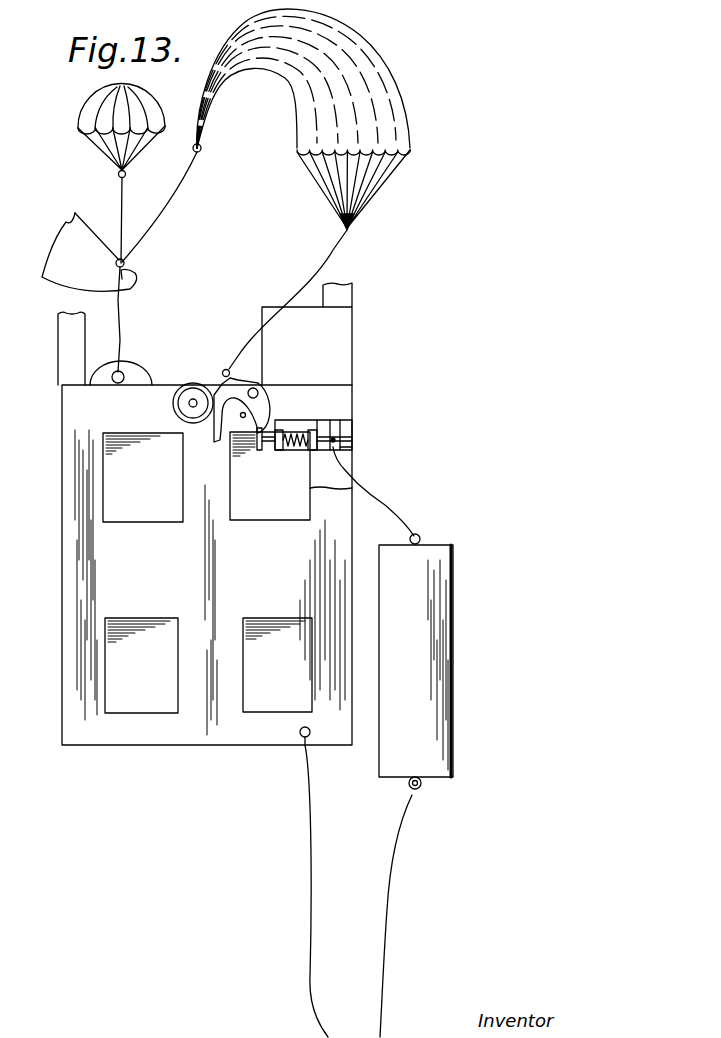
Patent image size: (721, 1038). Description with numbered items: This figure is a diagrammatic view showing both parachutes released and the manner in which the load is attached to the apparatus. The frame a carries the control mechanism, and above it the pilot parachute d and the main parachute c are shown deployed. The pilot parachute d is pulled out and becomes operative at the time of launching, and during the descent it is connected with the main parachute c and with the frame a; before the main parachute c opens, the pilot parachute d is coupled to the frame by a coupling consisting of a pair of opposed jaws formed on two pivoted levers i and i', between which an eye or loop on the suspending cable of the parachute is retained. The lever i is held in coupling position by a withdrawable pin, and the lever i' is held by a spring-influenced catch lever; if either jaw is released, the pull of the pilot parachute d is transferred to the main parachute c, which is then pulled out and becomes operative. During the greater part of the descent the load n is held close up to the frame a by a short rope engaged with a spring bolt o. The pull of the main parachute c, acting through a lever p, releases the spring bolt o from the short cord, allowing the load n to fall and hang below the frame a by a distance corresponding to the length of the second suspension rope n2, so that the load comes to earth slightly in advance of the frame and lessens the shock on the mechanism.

The pilot parachute d is at (110, 100).
The main parachute c is at (373, 97).
The coupling lever i is at (126, 360).
The coupling lever i' is at (58, 348).
The lever p is at (237, 366).
The spring bolt o is at (305, 428).
The frame a is at (92, 583).
The load n is at (416, 661).
The second suspension rope n2 is at (393, 863).